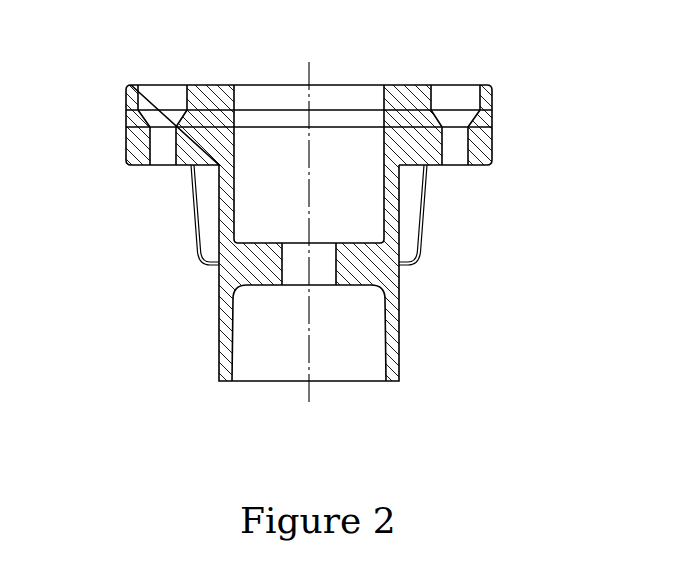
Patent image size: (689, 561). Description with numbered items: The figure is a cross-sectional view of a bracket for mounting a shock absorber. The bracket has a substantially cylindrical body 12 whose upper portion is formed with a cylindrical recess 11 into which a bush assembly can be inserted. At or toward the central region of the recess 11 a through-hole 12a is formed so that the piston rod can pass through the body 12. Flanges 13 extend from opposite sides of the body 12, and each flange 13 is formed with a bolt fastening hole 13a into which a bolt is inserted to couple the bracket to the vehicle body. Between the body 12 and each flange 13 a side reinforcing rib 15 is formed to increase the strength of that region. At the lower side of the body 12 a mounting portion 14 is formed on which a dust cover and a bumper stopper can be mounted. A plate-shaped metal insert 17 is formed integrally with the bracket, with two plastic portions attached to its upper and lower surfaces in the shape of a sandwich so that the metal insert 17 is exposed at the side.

The recess 11 is at (347, 136).
The body 12 is at (400, 323).
The through-hole 12a is at (288, 285).
The flange 13 is at (125, 149).
The bolt fastening hole 13a is at (161, 141).
The mounting portion 14 is at (347, 365).
The side reinforcing rib 15 is at (427, 208).
The metal insert 17 is at (125, 117).